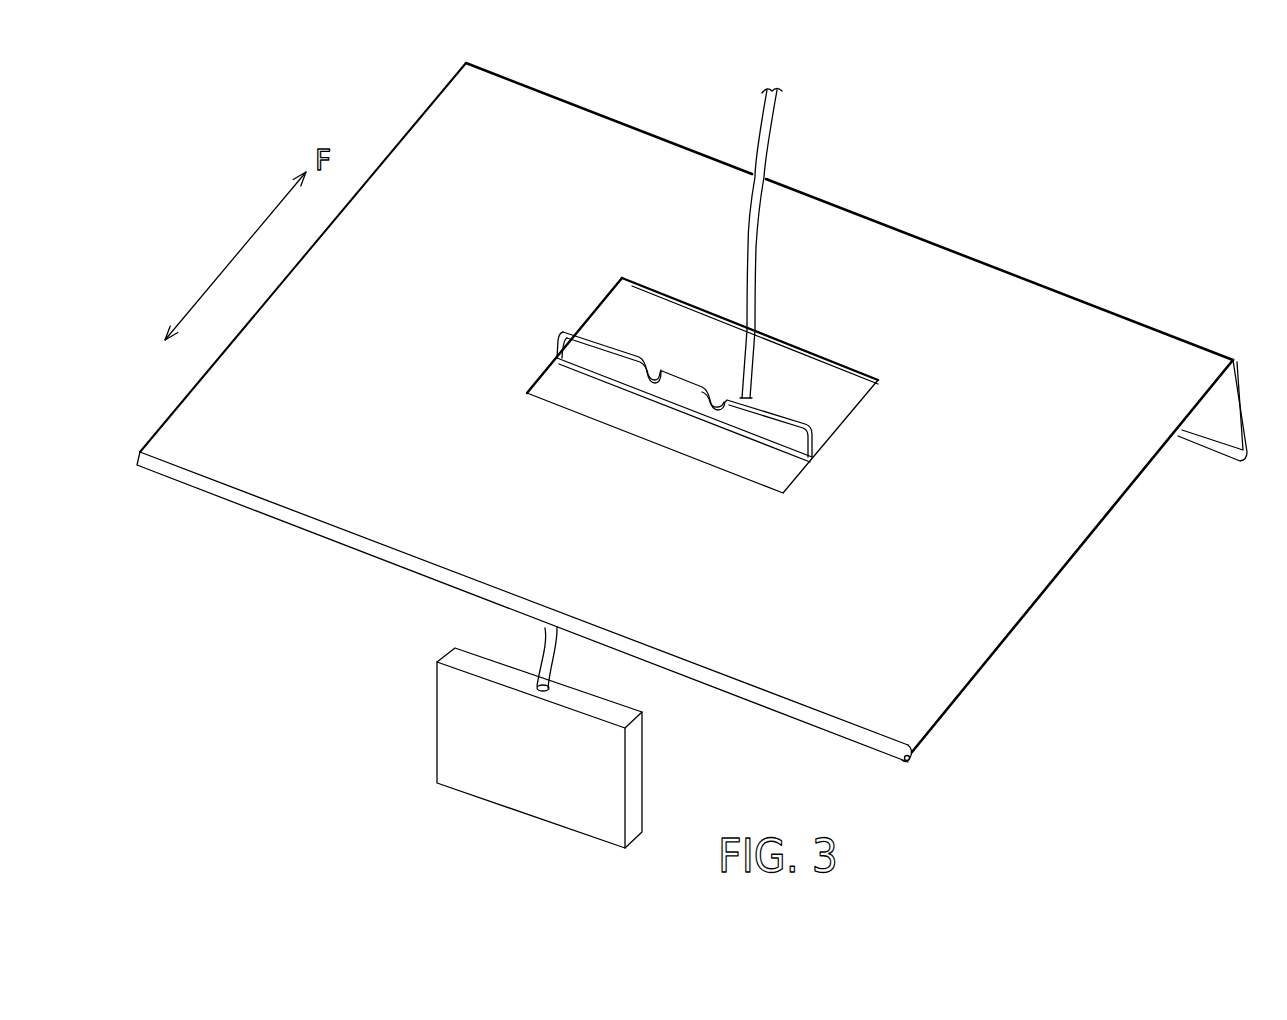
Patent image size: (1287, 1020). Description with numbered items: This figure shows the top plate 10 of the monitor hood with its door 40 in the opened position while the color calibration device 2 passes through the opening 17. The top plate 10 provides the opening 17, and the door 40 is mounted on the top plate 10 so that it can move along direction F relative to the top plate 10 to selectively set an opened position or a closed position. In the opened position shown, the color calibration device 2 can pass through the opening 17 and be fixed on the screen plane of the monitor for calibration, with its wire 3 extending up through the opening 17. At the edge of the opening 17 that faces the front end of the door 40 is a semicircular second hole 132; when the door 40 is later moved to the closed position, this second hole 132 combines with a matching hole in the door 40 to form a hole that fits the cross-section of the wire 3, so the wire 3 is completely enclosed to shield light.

The top plate 10 is at (1065, 142).
The opening 17 is at (770, 378).
The door 40 is at (587, 402).
The second hole 132 is at (753, 328).
The wire 3 is at (768, 108).
The color calibration device 2 is at (447, 743).